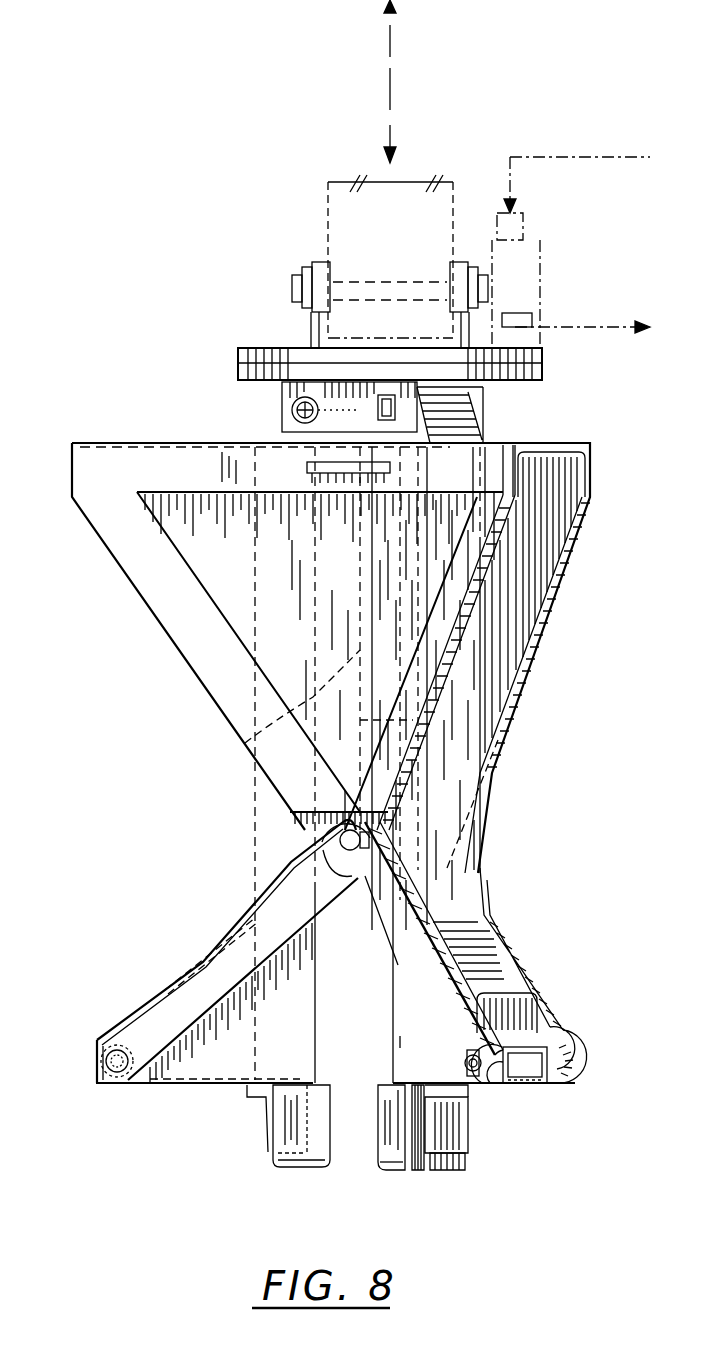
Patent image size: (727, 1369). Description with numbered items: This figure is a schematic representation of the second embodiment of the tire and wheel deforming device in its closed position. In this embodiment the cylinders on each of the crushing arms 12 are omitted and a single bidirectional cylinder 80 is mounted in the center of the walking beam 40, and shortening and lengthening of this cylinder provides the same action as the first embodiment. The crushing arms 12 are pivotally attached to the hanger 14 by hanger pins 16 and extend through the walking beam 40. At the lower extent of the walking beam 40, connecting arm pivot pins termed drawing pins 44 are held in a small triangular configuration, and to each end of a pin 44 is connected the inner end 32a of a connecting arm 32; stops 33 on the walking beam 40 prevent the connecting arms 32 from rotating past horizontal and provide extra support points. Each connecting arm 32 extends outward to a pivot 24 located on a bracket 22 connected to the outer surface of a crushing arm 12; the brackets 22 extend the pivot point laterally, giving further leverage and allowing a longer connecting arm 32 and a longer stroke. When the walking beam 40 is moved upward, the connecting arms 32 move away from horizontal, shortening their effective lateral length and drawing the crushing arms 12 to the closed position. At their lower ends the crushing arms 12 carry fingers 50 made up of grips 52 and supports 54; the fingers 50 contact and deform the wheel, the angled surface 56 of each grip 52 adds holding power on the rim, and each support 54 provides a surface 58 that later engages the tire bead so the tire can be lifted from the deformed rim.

The crushing arm 12 is at (483, 440).
The hanger 14 is at (545, 378).
The hanger pin 16 is at (296, 408).
The bracket 22 is at (198, 1090).
The pivot 24 is at (100, 1062).
The connecting arm 32 is at (246, 925).
The inner end of connecting arm 32a is at (320, 836).
The stop 33 is at (300, 822).
The walking beam 40 is at (226, 447).
The drawing pin 44 is at (353, 852).
The crushing arm finger 50 is at (272, 1150).
The grip 52 is at (302, 1168).
The support 54 is at (266, 1120).
The angled surface 56 is at (372, 1150).
The surface 58 is at (420, 1150).
The bidirectional cylinder 80 is at (256, 744).